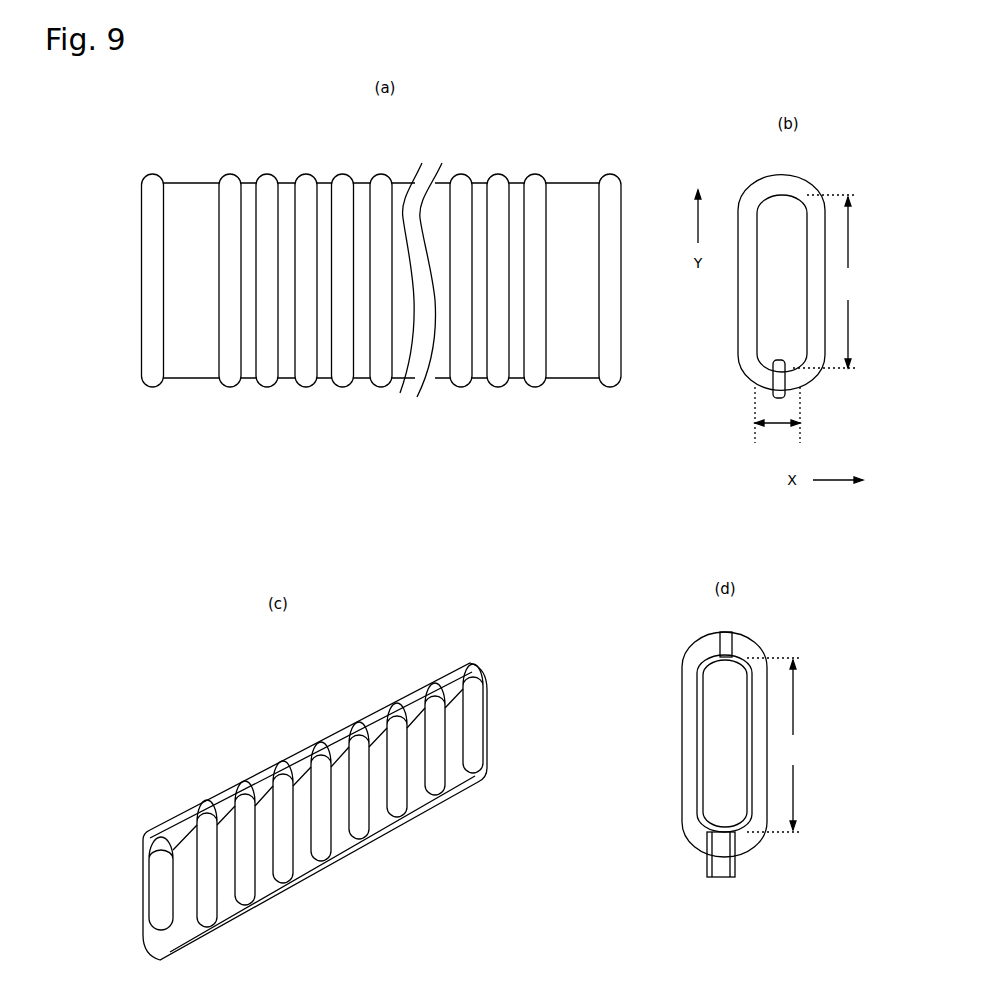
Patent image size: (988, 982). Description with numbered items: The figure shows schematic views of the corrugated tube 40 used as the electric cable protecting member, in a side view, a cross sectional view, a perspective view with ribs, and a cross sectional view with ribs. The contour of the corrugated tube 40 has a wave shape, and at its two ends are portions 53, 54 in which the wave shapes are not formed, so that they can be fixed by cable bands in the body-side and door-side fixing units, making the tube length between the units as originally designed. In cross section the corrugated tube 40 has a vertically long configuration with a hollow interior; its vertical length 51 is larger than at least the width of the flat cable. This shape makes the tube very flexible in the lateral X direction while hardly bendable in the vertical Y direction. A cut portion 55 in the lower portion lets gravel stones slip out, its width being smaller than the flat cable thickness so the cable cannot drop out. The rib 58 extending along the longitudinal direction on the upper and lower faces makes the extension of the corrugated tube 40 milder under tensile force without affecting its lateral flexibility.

The corrugated tube 40 is at (492, 182).
The vertical length 51 is at (802, 513).
The portion without wave shape 53 is at (193, 367).
The portion without wave shape 54 is at (573, 365).
The cut portion 55 is at (773, 385).
The protrusion 58 is at (317, 743).